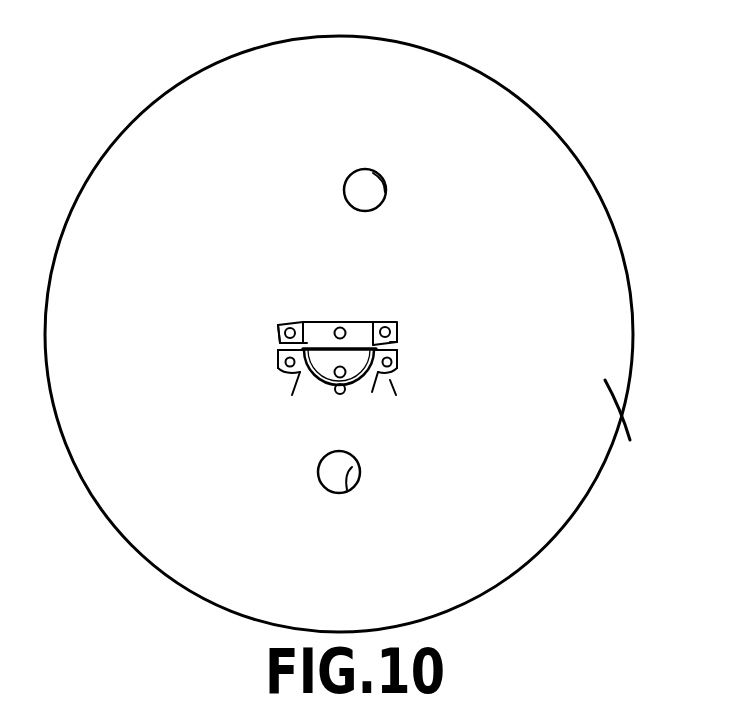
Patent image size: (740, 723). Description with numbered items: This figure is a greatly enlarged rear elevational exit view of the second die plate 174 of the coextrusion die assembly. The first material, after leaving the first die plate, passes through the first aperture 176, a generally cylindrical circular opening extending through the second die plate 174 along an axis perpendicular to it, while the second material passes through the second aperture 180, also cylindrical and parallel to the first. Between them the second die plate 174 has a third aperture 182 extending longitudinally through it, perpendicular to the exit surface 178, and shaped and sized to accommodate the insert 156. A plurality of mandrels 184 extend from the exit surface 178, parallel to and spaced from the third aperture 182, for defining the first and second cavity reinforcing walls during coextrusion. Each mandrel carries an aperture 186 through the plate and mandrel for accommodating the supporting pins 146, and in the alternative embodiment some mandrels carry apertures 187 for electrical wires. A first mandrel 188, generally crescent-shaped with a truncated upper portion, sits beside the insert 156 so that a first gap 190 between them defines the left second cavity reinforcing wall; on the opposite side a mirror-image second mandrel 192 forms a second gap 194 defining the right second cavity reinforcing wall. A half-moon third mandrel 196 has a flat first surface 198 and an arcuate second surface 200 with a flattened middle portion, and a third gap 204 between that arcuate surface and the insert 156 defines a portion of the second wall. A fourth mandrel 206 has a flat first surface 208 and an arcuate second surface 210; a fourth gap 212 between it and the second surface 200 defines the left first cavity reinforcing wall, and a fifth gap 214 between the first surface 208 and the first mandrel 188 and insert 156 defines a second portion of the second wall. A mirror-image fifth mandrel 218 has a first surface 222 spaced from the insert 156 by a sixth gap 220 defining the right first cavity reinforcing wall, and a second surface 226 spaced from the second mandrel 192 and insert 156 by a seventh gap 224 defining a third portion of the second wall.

The supporting pins 146 is at (413, 331).
The insert 156 is at (313, 396).
The second die plate 174 is at (605, 412).
The first aperture 176 is at (373, 173).
The exit surface 178 is at (580, 198).
The second aperture 180 is at (360, 462).
The third aperture 182 is at (327, 393).
The mandrels 184 is at (400, 335).
The aperture 186 is at (387, 377).
The apertures 187 is at (283, 328).
The first mandrel 188 is at (297, 380).
The first gap 190 is at (280, 365).
The second mandrel 192 is at (393, 360).
The second gap 194 is at (387, 393).
The third mandrel 196 is at (368, 320).
The first surface 198 is at (342, 328).
The second surface 200 is at (378, 322).
The third gap 204 is at (328, 331).
The fourth mandrel 206 is at (287, 327).
The first surface 208 is at (280, 350).
The second surface 210 is at (292, 320).
The fourth gap 212 is at (302, 320).
The fifth gap 214 is at (280, 350).
The fifth mandrel 218 is at (400, 343).
The sixth gap 220 is at (400, 350).
The first surface 222 is at (383, 322).
The seventh gap 224 is at (400, 355).
The second surface 226 is at (363, 387).